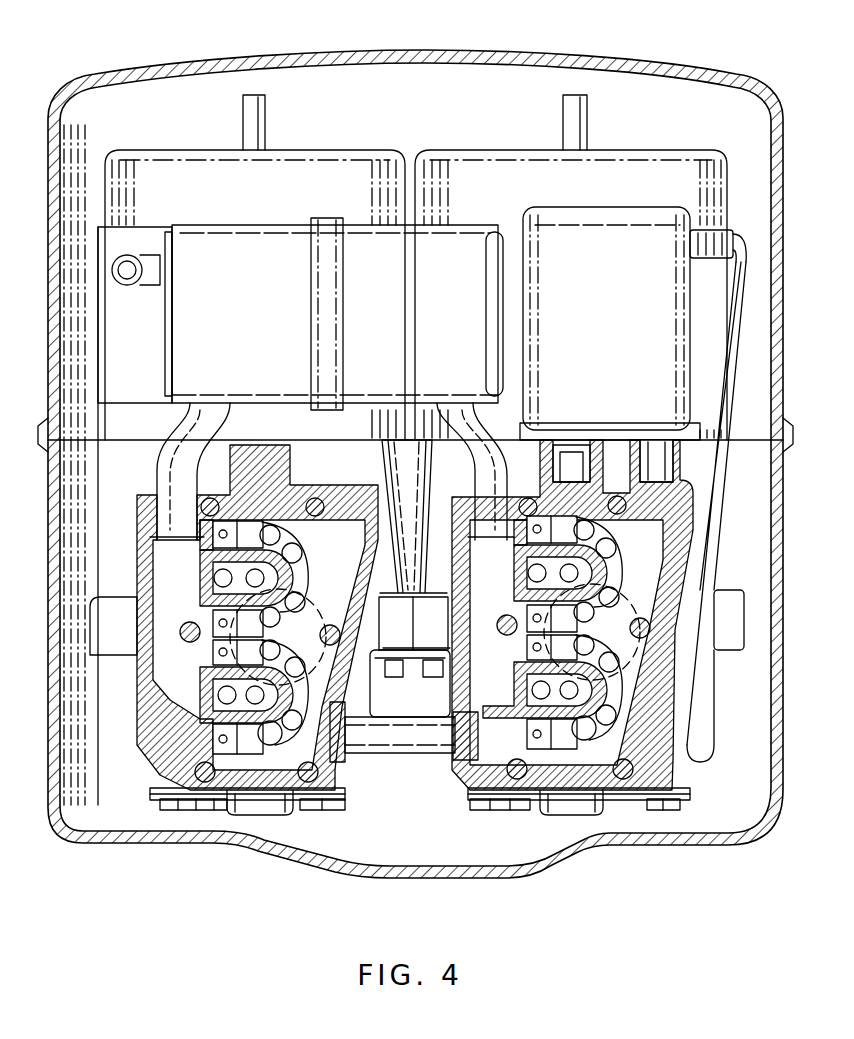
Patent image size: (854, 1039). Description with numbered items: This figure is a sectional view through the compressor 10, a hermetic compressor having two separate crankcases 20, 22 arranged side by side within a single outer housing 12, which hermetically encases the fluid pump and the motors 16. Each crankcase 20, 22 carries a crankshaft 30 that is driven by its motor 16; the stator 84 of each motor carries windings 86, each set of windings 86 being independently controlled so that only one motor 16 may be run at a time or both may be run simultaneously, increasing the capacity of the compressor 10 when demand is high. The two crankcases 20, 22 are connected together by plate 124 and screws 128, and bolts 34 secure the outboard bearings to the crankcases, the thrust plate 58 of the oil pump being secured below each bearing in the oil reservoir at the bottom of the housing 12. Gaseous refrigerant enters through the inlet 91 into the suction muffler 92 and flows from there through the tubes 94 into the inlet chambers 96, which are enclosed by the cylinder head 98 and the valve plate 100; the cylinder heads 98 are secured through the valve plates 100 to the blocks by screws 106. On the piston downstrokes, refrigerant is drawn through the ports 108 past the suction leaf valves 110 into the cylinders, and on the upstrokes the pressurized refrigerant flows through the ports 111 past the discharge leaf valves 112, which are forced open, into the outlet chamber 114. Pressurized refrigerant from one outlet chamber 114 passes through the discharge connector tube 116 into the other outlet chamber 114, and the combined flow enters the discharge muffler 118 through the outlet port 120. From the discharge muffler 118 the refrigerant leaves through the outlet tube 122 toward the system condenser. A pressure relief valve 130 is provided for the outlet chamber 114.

The compressor 10 is at (522, 882).
The outer housing 12 is at (430, 880).
The motor 16 is at (416, 260).
The crankcase 20 is at (116, 655).
The crankcase 22 is at (421, 633).
The crankshaft 30 is at (265, 115).
The bolts 34 is at (190, 812).
The thrust plate 58 is at (286, 814).
The stator 84 is at (102, 292).
The windings 86 is at (180, 162).
The inlet 91 is at (136, 250).
The suction muffler 92 is at (333, 222).
The tubes 94 is at (172, 458).
The inlet chambers 96 is at (150, 562).
The cylinder head 98 is at (150, 748).
The valve plate 100 is at (150, 537).
The screws 106 is at (316, 498).
The ports 108 is at (216, 580).
The leaf valves 110 is at (318, 570).
The ports 111 is at (441, 647).
The leaf valves 112 is at (305, 684).
The outlet chamber 114 is at (318, 545).
The discharge connector tube 116 is at (413, 752).
The discharge muffler 118 is at (648, 240).
The outlet port 120 is at (580, 448).
The outlet tube 122 is at (722, 498).
The plate 124 is at (411, 639).
The screws 128 is at (432, 678).
The pressure relief valve 130 is at (657, 448).